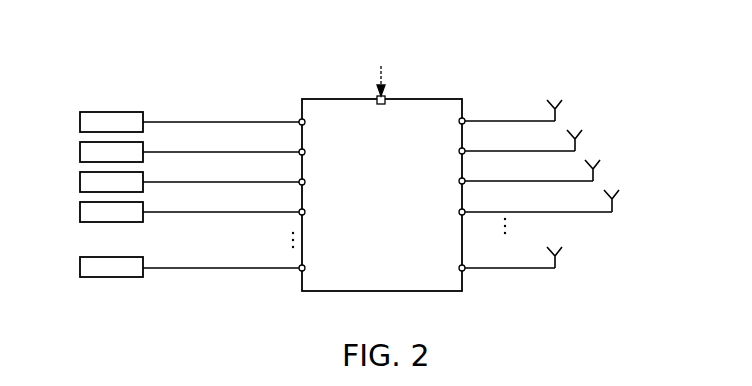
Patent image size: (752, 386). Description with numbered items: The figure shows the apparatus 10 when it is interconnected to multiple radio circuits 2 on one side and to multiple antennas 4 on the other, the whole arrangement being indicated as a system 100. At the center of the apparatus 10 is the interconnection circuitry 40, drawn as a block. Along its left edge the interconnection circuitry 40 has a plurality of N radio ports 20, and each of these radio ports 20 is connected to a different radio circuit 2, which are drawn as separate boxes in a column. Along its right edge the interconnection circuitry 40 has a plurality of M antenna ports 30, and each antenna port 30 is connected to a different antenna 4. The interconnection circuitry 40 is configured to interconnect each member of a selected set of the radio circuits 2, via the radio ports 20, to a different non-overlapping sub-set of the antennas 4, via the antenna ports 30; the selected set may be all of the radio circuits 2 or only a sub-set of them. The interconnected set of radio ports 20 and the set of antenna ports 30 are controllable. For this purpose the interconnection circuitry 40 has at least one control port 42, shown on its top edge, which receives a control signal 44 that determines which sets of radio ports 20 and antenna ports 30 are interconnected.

The radio circuit 2 is at (80, 118).
The antenna 4 is at (561, 104).
The apparatus 10 is at (462, 45).
The radio port 20 is at (299, 121).
The antenna port 30 is at (465, 120).
The interconnection circuitry 40 is at (323, 292).
The control port 42 is at (386, 97).
The control signal 44 is at (378, 84).
The antenna system 100 is at (557, 62).